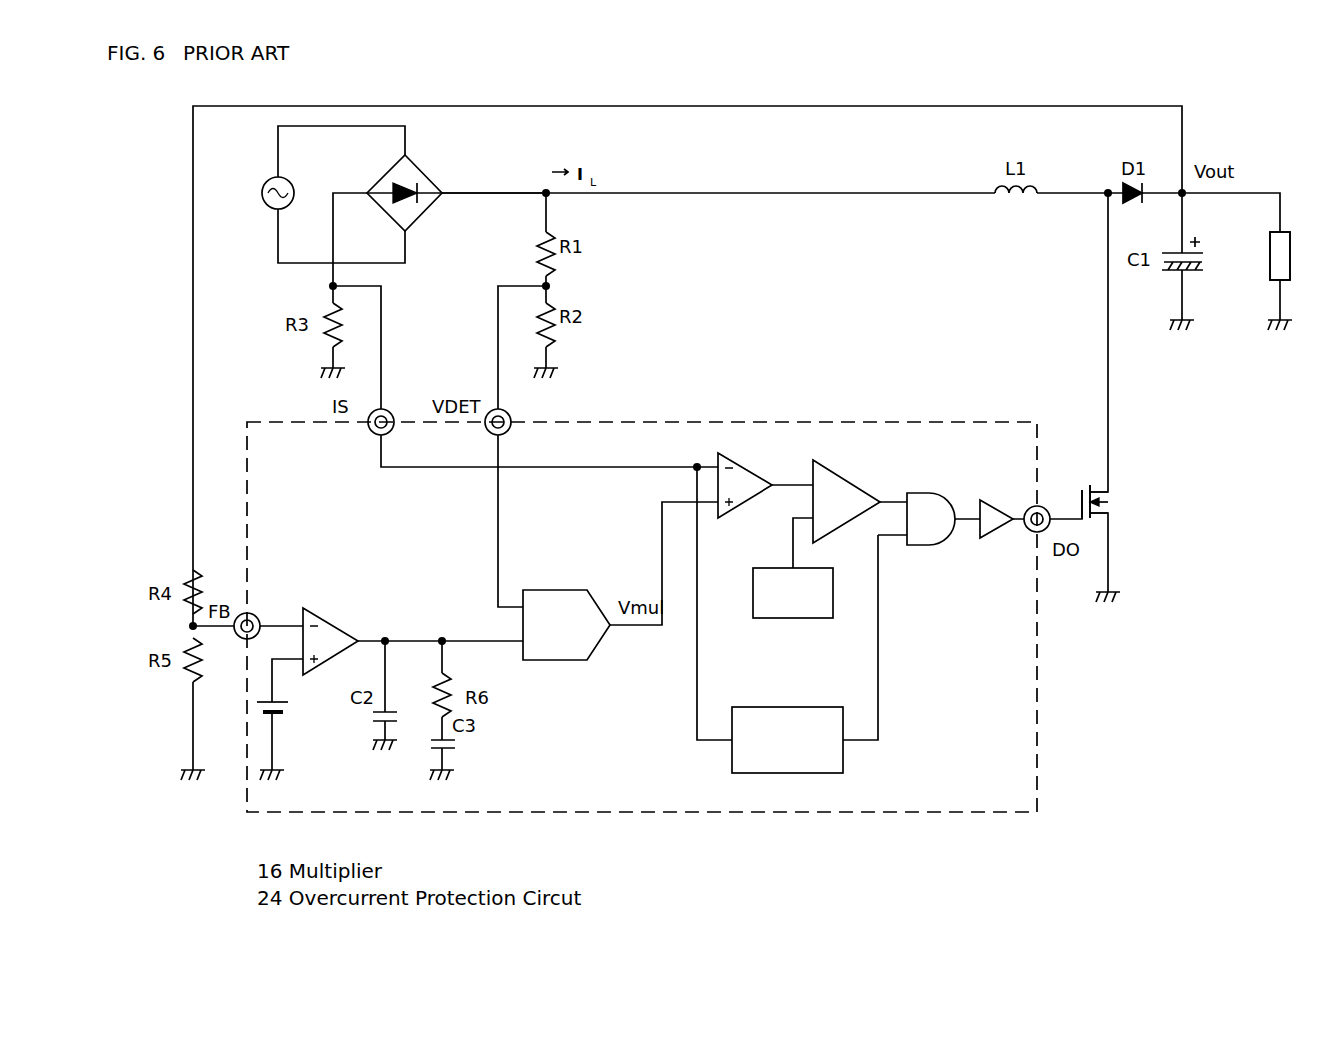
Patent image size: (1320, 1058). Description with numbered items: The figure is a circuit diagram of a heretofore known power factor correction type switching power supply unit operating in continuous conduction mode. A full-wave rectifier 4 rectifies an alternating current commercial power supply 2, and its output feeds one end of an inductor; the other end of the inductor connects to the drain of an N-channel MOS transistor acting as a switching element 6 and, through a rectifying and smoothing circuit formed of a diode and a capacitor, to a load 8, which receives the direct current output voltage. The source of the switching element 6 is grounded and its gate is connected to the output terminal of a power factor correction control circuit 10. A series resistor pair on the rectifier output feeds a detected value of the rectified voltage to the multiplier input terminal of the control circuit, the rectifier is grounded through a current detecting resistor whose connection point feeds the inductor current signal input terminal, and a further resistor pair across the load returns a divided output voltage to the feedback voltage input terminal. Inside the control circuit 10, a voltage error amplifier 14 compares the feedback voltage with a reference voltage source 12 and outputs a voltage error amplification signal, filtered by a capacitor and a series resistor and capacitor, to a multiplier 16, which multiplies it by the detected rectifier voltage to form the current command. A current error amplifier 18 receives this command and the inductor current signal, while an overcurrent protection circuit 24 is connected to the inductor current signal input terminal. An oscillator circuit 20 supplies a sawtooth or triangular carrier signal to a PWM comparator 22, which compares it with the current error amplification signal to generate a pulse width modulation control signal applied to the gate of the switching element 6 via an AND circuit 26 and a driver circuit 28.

The commercial power supply 2 is at (262, 198).
The full-wave rectifier 4 is at (427, 173).
The switching element 6 is at (1115, 497).
The load 8 is at (1270, 261).
The power factor correction control circuit 10 is at (883, 422).
The reference voltage source 12 is at (293, 706).
The voltage error amplifier 14 is at (322, 620).
The multiplier 16 is at (553, 590).
The current error amplifier 18 is at (748, 465).
The oscillator circuit 20 is at (795, 618).
The PWM comparator 22 is at (838, 470).
The overcurrent protection circuit 24 is at (800, 707).
The AND circuit 26 is at (928, 493).
The driver circuit 28 is at (990, 500).